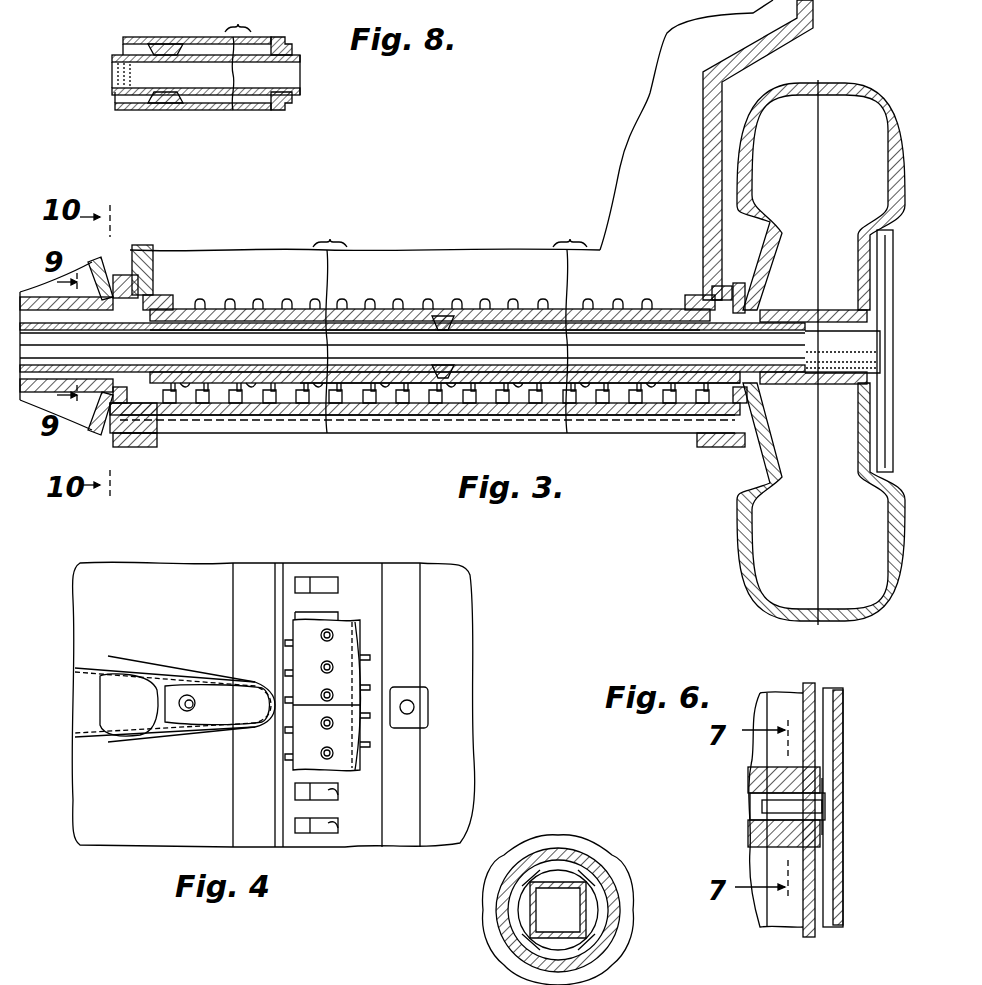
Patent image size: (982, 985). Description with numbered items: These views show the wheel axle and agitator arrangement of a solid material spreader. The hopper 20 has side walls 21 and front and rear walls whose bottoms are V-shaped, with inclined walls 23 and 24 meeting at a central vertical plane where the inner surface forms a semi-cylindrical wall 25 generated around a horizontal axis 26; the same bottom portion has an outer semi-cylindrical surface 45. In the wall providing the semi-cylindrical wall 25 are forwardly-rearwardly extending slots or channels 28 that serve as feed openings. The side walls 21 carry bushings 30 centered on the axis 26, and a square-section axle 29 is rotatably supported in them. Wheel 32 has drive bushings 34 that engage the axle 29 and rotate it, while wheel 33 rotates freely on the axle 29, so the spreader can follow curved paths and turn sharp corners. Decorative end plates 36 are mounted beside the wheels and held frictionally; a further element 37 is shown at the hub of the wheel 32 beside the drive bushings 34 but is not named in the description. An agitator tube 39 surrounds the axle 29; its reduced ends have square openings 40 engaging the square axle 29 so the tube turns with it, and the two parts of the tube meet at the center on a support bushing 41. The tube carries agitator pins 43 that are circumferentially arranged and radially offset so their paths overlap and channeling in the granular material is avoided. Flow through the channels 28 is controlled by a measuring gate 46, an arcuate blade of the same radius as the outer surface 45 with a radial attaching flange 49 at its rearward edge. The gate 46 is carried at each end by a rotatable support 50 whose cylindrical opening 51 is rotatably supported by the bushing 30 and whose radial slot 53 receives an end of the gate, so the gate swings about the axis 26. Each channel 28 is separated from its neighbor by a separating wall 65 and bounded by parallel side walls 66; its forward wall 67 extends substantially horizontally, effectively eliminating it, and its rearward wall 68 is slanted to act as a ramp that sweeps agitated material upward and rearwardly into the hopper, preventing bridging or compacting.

In FIG. 3, the hopper 20 is at (706, 30).
In FIG. 3, the side walls 21 is at (141, 245).
In FIG. 4, the inclined wall 23 is at (82, 785).
In FIG. 4, the inclined wall 24 is at (468, 662).
In FIG. 4, the semi-cylindrical wall 25 is at (356, 833).
In FIG. 3, the horizontal axis 26 is at (522, 345).
In FIG. 3, the channels 28 is at (460, 400).
In FIG. 4, the channels 28 is at (305, 828).
In FIG. 3, the axle 29 is at (388, 336).
In FIG. 8, the axle 29 is at (112, 75).
In FIG. 9, the axle 29 is at (568, 880).
In FIG. 3, the bushings 30 is at (158, 295).
In FIG. 3, the wheel 32 is at (748, 182).
In FIG. 6, the wheel 32 is at (803, 930).
In FIG. 3, the wheel 33 is at (101, 402).
In FIG. 9, the wheel 33 is at (615, 876).
In FIG. 3, the drive bushings 34 is at (835, 310).
In FIG. 6, the drive bushings 34 is at (748, 768).
In FIG. 3, the end plates 36 is at (893, 440).
In FIG. 6, the end plates 36 is at (843, 755).
In FIG. 6, the axle 37 is at (825, 806).
In FIG. 3, the agitator tube 39 is at (498, 304).
In FIG. 8, the agitator tube 39 is at (264, 112).
In FIG. 4, the agitator tube 39 is at (292, 748).
In FIG. 3, the square openings 40 is at (183, 309).
In FIG. 3, the support bushing 41 is at (438, 316).
In FIG. 8, the support bushing 41 is at (172, 45).
In FIG. 3, the agitator pins 43 is at (370, 300).
In FIG. 4, the agitator pins 43 is at (330, 636).
In FIG. 3, the outer semi-cylindrical surface 45 is at (376, 418).
In FIG. 3, the measuring gate 46 is at (214, 420).
In FIG. 3, the radial attaching flange 49 is at (632, 430).
In FIG. 3, the rotatable support 50 is at (152, 440).
In FIG. 3, the cylindrical opening 51 is at (124, 275).
In FIG. 3, the radial slot 53 is at (132, 440).
In FIG. 3, the separating wall 65 is at (345, 398).
In FIG. 4, the separating wall 65 is at (293, 806).
In FIG. 4, the side walls 66 is at (338, 825).
In FIG. 4, the forward wall 67 is at (290, 974).
In FIG. 4, the rearward wall 68 is at (333, 583).